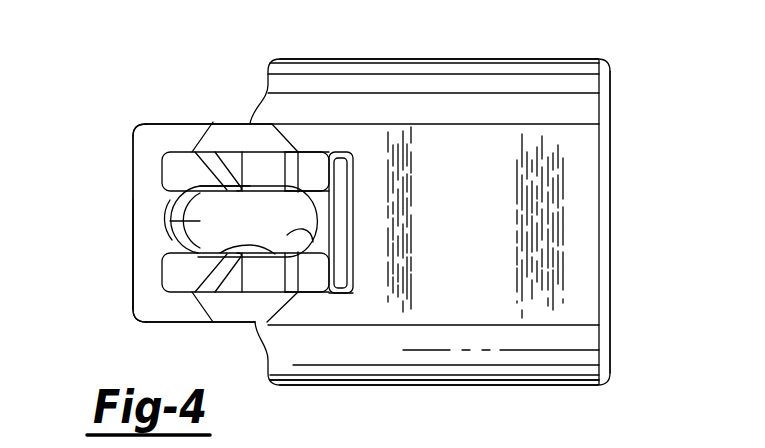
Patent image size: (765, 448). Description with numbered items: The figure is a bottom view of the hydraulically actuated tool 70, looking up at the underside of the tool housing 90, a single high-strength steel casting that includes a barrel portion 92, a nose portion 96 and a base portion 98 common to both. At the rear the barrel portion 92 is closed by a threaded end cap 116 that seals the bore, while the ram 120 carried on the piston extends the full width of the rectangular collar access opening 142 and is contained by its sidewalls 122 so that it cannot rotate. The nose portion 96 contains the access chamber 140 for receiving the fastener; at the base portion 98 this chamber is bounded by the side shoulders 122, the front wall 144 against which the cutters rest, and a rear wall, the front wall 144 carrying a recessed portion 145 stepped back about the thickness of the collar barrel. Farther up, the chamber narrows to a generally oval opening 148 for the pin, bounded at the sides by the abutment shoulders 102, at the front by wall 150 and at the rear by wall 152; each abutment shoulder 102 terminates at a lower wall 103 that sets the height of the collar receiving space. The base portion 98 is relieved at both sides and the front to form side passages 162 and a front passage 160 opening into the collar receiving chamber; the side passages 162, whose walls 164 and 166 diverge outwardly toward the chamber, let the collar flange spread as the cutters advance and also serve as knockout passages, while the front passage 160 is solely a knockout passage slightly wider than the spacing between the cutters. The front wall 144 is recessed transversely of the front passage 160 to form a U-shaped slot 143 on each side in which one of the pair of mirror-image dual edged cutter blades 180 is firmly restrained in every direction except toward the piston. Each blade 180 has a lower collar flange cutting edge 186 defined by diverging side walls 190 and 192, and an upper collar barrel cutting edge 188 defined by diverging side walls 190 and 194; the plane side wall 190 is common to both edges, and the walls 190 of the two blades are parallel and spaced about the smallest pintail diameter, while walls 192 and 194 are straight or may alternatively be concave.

The hydraulically actuated tool 70 is at (288, 43).
The tool housing 90 is at (324, 388).
The barrel portion 92 is at (415, 388).
The nose portion 96 is at (133, 298).
The base portion 98 is at (495, 251).
The abutment shoulders 102 is at (293, 164).
The lower wall 103 is at (268, 290).
The end cap 116 is at (610, 280).
The ram 120 is at (346, 265).
The sidewalls 122 is at (302, 150).
The access chamber 140 is at (261, 238).
The collar access opening 142 is at (300, 150).
The U-shaped slot 143 is at (162, 152).
The front wall 144 is at (163, 180).
The recessed portion 145 is at (172, 205).
The oval opening 148 is at (317, 228).
The front wall of oval opening 150 is at (189, 204).
The rear wall of oval opening 152 is at (291, 220).
The front passage 160 is at (147, 213).
The side passages 162 is at (233, 122).
The wall of side passage 164 is at (211, 134).
The wall of side passage 166 is at (280, 128).
The dual edged cutter blades 180 is at (170, 165).
The lower collar flange cutting edge 186 is at (238, 199).
The upper collar barrel cutting edge 188 is at (241, 168).
The side wall 190 is at (173, 241).
The side wall 192 is at (165, 262).
The side wall 194 is at (298, 305).